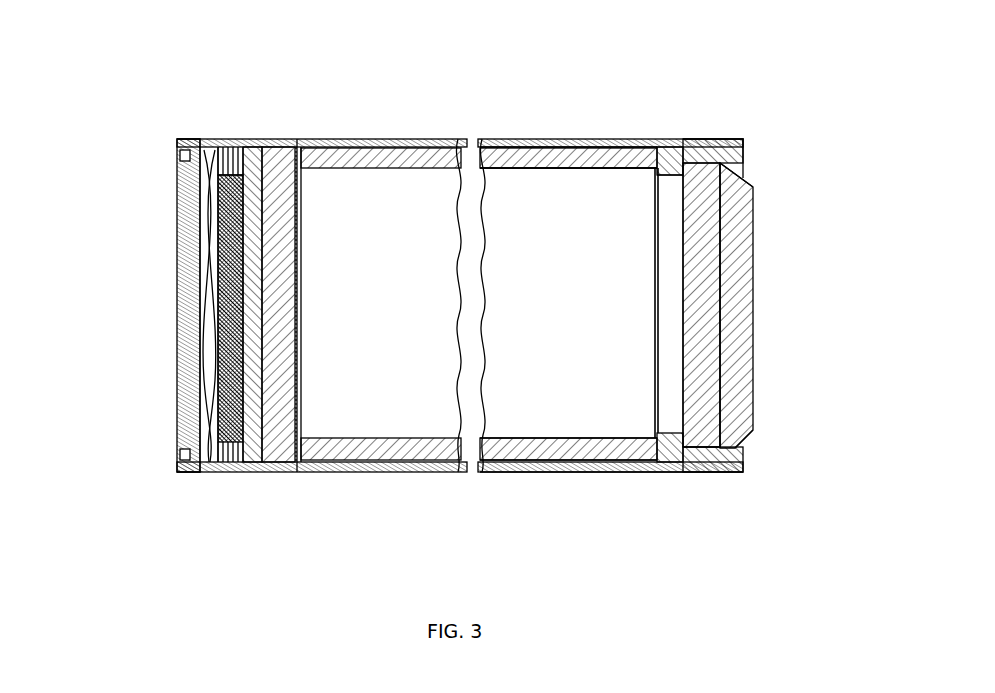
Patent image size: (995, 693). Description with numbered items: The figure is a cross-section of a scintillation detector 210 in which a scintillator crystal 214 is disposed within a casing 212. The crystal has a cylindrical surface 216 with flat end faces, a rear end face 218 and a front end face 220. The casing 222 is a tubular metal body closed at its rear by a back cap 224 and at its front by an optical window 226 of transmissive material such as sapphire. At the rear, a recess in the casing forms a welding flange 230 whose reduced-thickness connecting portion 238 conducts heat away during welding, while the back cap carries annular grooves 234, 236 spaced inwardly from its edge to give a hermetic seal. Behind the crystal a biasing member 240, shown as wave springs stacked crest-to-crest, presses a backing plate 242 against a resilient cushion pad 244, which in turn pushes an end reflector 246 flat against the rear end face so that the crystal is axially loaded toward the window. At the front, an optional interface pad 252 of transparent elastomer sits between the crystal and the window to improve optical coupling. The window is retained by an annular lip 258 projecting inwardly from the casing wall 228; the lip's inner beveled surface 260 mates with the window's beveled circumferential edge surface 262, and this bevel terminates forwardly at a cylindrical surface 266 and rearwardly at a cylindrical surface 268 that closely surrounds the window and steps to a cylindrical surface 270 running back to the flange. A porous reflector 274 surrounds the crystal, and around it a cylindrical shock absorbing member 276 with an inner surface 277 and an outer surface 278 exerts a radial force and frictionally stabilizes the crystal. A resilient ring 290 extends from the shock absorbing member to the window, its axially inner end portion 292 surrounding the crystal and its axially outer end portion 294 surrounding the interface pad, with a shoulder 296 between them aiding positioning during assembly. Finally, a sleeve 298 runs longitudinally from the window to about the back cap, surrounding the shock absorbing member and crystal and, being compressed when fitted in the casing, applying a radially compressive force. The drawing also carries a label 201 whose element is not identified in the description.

The electrochemical cell 201 is at (237, 466).
The scintillation detector 210 is at (152, 52).
The casing 212 is at (485, 472).
The scintillator crystal 214 is at (395, 318).
The cylindrical surface 216 is at (383, 428).
The rear end face 218 is at (301, 382).
The front end face 220 is at (655, 305).
The casing 222 is at (347, 146).
The back cap 224 is at (178, 392).
The optical window 226 is at (755, 340).
The casing wall 228 is at (555, 461).
The welding flange 230 is at (185, 472).
The annular groove 234 is at (178, 153).
The annular groove 236 is at (178, 452).
The connecting portion 238 is at (190, 141).
The biasing member 240 is at (205, 320).
The backing plate 242 is at (252, 144).
The cushion pad 244 is at (280, 472).
The end reflector 246 is at (301, 258).
The interface pad 252 is at (670, 382).
The annular lip 258 is at (746, 150).
The inner beveled surface 260 is at (752, 183).
The beveled circumferential edge surface 262 is at (710, 139).
The cylindrical surface 266 is at (752, 440).
The cylindrical surface 268 is at (712, 472).
The cylindrical surface 270 is at (645, 472).
The reflector 274 is at (558, 168).
The shock absorbing member 276 is at (481, 146).
The inner surface 277 is at (503, 166).
The outer surface 278 is at (533, 146).
The ring 290 is at (655, 175).
The axially inner end portion 292 is at (600, 148).
The axially outer end portion 294 is at (671, 150).
The shoulder 296 is at (658, 440).
The sleeve 298 is at (420, 139).